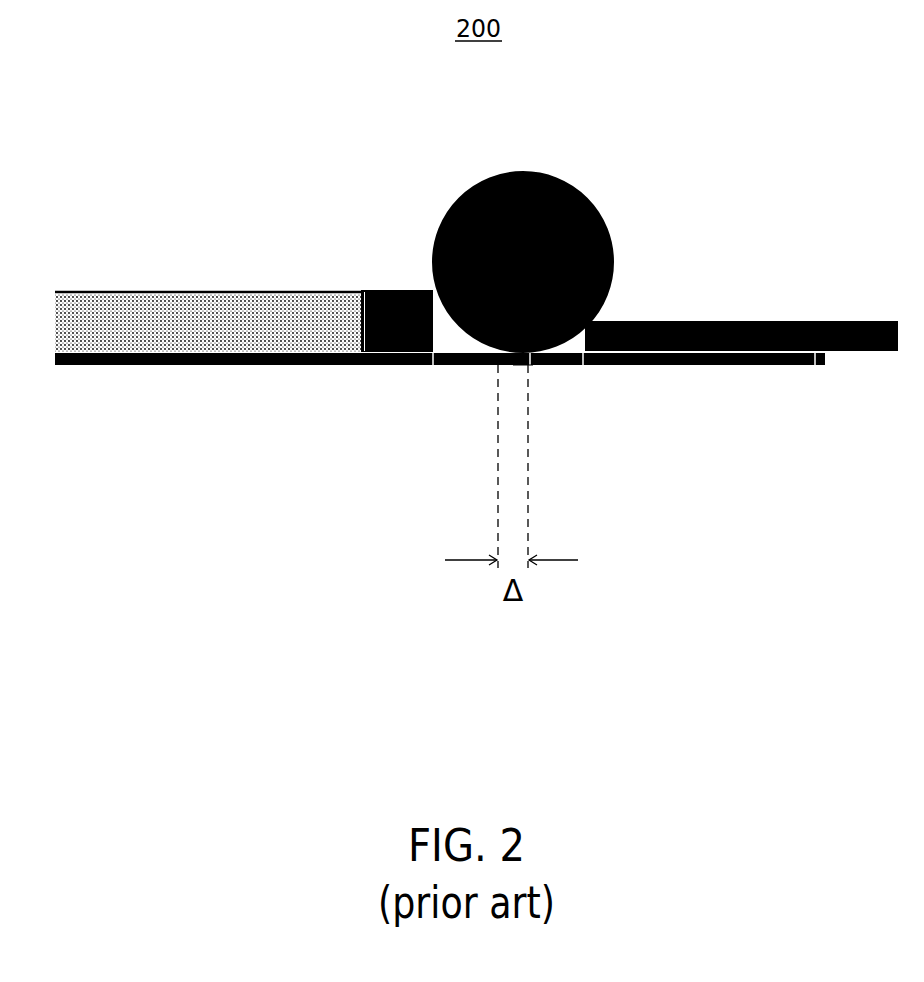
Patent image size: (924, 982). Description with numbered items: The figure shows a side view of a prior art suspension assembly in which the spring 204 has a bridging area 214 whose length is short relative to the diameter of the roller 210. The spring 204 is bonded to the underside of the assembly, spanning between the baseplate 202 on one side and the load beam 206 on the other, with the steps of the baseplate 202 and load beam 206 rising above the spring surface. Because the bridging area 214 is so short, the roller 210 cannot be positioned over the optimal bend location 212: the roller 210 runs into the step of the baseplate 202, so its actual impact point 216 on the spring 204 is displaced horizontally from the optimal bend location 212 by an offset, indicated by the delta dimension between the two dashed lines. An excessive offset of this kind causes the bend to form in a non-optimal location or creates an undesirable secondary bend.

The baseplate 202 is at (175, 295).
The spring 204 is at (697, 362).
The load beam 206 is at (723, 315).
The roller 210 is at (598, 215).
The optimal bend location 212 is at (478, 366).
The bridging area 214 is at (542, 414).
The impact point 216 is at (534, 364).